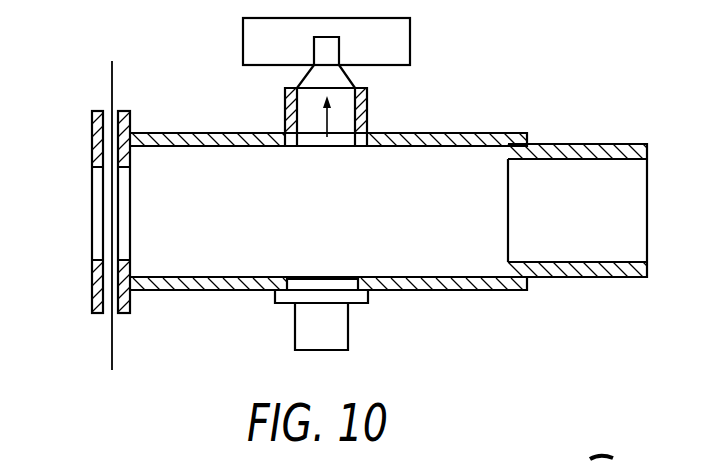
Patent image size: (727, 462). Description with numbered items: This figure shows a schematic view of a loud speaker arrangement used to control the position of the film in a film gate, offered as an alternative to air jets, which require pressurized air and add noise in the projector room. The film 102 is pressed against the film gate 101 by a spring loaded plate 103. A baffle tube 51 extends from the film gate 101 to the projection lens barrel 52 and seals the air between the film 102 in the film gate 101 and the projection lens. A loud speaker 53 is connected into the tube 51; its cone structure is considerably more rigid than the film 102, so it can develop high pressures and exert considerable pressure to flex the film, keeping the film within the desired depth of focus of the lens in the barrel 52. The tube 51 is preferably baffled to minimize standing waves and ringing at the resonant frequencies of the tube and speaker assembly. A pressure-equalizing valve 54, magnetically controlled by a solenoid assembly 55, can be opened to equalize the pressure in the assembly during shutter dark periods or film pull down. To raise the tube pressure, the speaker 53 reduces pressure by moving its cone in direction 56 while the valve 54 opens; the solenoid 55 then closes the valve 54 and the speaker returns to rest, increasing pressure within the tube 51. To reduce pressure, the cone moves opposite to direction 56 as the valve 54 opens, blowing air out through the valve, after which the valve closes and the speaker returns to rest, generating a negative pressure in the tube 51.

The baffle tube 51 is at (438, 132).
The projection lens barrel 52 is at (575, 143).
The loud speaker 53 is at (410, 40).
The pressure-equalizing valve 54 is at (360, 299).
The solenoid assembly 55 is at (343, 333).
The direction of speaker cone movement 56 is at (328, 125).
The film gate 101 is at (130, 118).
The film 102 is at (113, 77).
The spring loaded plate 103 is at (91, 130).